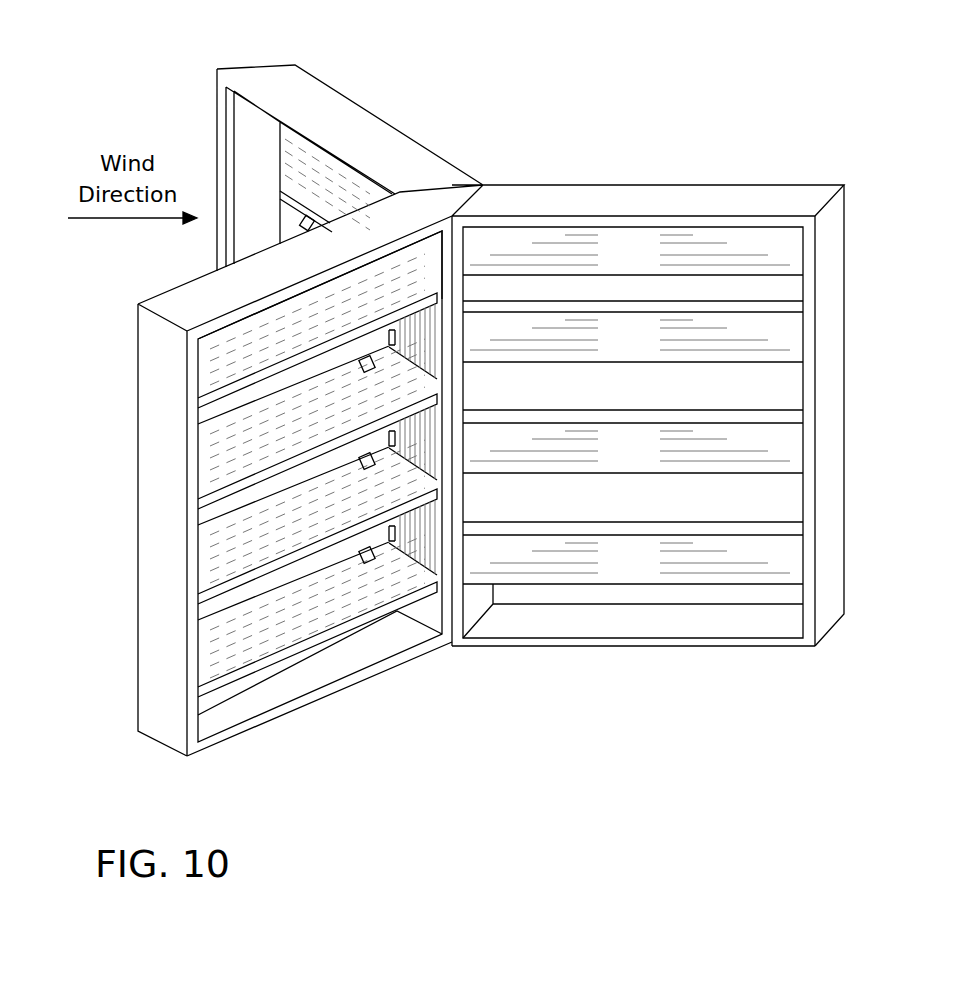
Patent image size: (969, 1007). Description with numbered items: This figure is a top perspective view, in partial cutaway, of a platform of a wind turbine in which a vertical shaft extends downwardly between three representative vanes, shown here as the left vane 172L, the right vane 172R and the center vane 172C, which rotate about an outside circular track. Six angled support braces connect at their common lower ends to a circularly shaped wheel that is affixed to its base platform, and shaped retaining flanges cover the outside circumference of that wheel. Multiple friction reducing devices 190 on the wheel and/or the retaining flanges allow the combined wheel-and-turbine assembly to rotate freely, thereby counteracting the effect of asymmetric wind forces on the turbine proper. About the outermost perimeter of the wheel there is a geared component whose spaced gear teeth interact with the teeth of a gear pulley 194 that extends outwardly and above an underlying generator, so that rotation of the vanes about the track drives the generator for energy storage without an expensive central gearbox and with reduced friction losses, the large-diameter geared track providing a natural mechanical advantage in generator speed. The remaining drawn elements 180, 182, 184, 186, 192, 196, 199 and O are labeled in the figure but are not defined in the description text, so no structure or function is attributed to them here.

The vane 172L is at (380, 90).
The vane 172R is at (632, 170).
The vane 172C is at (319, 727).
The top frame member 180 is at (372, 138).
The bottom frame member 182 is at (317, 677).
The side frame member 184 is at (216, 157).
The hinge / frame joint 186 is at (430, 258).
The friction reducing devices 190 is at (340, 194).
The second louver shelf 192 is at (317, 434).
The gear pulley 194 is at (317, 532).
The fourth louver shelf 196 is at (317, 629).
The clip 199 is at (302, 222).
The opening between louvers O is at (217, 407).